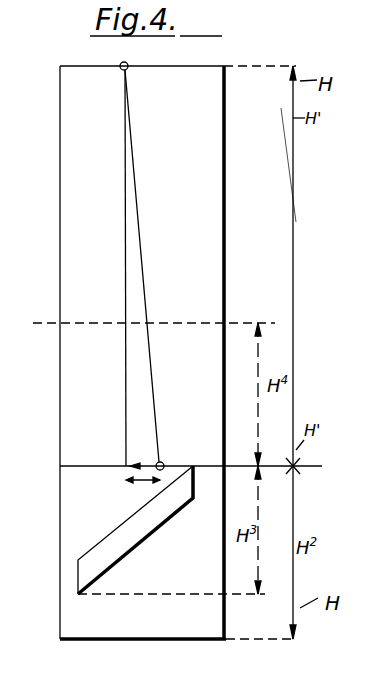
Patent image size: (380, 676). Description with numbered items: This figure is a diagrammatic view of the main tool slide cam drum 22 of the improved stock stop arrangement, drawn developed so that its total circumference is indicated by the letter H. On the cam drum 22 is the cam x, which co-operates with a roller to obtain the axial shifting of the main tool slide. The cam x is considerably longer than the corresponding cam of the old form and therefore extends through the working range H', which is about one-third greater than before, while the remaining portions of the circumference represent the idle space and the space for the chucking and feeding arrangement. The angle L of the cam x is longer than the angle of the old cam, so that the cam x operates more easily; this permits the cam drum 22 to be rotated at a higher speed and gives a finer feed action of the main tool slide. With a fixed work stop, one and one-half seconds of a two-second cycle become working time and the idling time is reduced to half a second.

The main tool slide cam drum 22 is at (60, 237).
The angle of the cam x L is at (142, 266).
The cam x is at (143, 241).